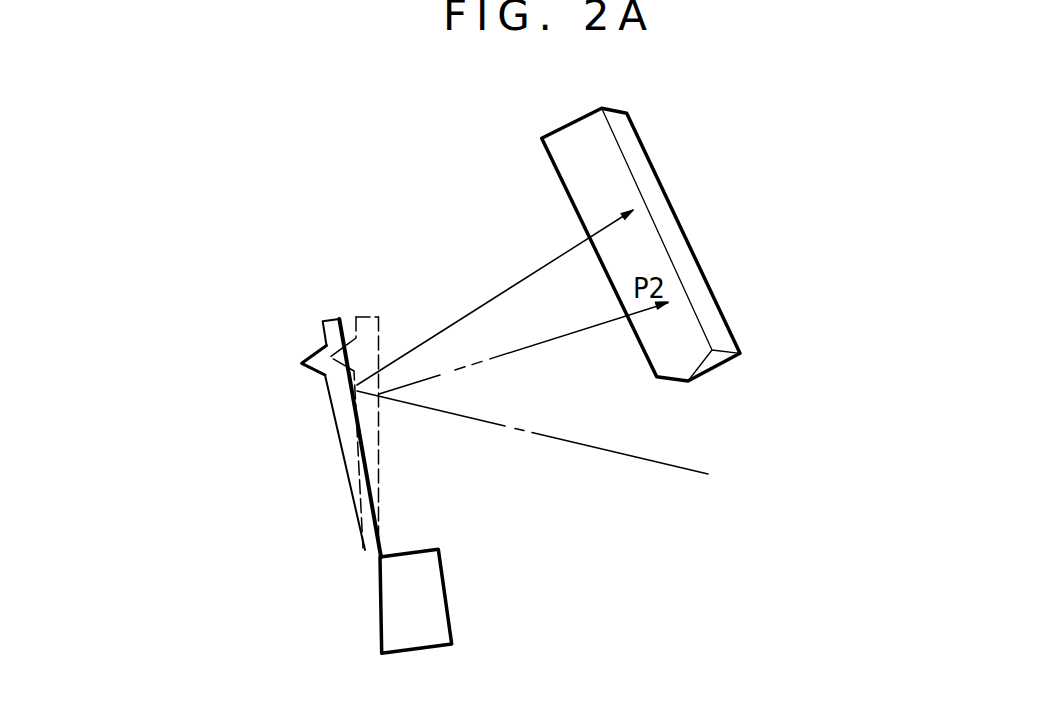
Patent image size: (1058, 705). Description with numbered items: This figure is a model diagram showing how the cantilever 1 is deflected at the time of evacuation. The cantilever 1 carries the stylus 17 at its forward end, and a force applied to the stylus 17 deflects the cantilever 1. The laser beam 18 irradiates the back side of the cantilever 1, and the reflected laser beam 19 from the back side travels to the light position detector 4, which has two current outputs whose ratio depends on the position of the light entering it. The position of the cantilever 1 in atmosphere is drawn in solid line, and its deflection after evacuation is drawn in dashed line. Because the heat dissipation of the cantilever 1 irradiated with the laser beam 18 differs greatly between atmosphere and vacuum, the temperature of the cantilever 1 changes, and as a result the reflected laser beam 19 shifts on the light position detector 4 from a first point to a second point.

The cantilever 1 is at (350, 458).
The light position detector 4 is at (643, 157).
The stylus 17 is at (315, 353).
The laser beam 18 is at (578, 443).
The reflected laser beam 19 is at (475, 307).